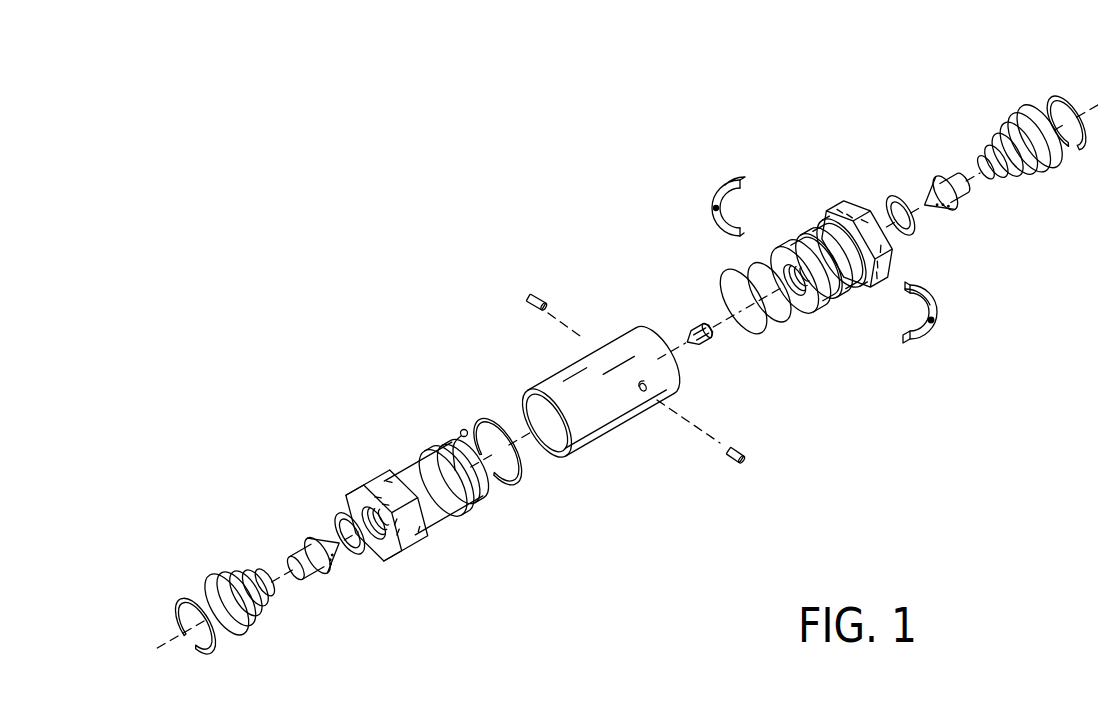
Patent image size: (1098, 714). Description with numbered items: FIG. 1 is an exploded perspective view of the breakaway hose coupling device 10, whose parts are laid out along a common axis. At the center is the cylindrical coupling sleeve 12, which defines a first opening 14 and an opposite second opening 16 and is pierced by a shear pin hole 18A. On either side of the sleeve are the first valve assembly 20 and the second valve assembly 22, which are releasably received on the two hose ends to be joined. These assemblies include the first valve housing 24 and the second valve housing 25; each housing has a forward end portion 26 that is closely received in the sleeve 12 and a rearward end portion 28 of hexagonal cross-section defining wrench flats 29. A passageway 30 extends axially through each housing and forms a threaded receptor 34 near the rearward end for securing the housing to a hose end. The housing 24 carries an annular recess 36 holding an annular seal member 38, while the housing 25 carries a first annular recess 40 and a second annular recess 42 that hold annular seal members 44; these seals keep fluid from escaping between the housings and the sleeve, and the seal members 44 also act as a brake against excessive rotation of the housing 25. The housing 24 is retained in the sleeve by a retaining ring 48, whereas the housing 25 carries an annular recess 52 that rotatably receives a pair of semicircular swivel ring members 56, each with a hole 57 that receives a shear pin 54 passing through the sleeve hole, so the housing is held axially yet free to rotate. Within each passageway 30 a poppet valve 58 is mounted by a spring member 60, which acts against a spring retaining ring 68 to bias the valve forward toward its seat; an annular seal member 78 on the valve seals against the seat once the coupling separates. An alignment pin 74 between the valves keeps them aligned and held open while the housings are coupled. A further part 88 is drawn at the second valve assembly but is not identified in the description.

The breakaway hose coupling device 10 is at (566, 172).
The cylindrical coupling sleeve 12 is at (600, 356).
The first opening 14 is at (553, 455).
The second opening 16 is at (674, 369).
The shear pin hole 18A is at (648, 397).
The first valve assembly 20 is at (434, 481).
The second valve assembly 22 is at (828, 214).
The first valve housing 24 is at (452, 522).
The second valve housing 25 is at (841, 291).
The forward end portion 26 is at (806, 307).
The rearward end portion 28 is at (840, 214).
The wrench flats 29 is at (870, 210).
The passageway 30 is at (784, 262).
The threaded receptor 34 is at (372, 543).
The annular recess 36 is at (440, 450).
The annular seal member 38 is at (497, 416).
The first annular recess 40 is at (802, 238).
The second annular recess 42 is at (820, 245).
The annular seal member 44 is at (752, 270).
The retaining ring 48 is at (463, 429).
The annular recess 52 is at (854, 282).
The shear pin 54 is at (544, 299).
The semicircular swivel ring member 56 is at (726, 182).
The hole 57 is at (712, 214).
The poppet valve 58 is at (320, 582).
The spring member 60 is at (1010, 120).
The spring retaining ring 68 is at (1063, 102).
The alignment pin 74 is at (690, 327).
The annular seal member 78 is at (893, 200).
The valve poppet 88 is at (952, 213).